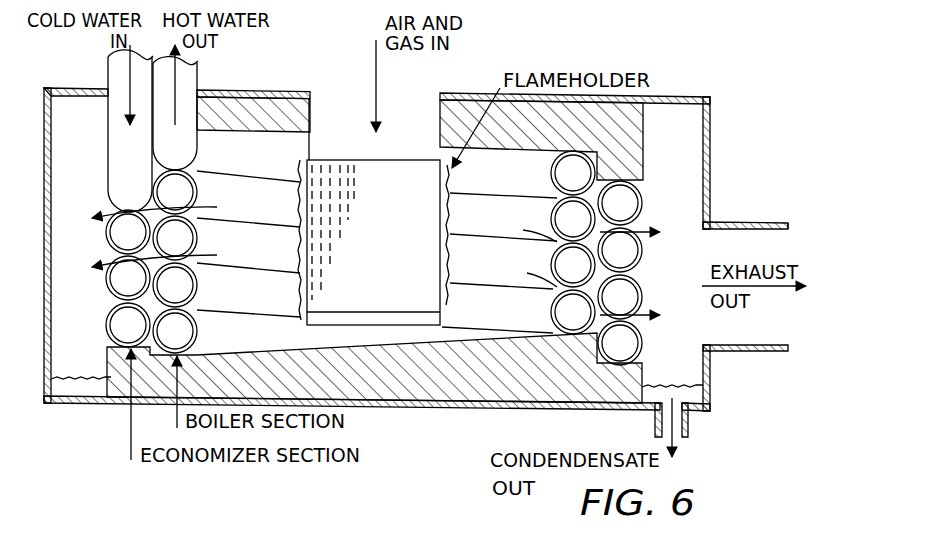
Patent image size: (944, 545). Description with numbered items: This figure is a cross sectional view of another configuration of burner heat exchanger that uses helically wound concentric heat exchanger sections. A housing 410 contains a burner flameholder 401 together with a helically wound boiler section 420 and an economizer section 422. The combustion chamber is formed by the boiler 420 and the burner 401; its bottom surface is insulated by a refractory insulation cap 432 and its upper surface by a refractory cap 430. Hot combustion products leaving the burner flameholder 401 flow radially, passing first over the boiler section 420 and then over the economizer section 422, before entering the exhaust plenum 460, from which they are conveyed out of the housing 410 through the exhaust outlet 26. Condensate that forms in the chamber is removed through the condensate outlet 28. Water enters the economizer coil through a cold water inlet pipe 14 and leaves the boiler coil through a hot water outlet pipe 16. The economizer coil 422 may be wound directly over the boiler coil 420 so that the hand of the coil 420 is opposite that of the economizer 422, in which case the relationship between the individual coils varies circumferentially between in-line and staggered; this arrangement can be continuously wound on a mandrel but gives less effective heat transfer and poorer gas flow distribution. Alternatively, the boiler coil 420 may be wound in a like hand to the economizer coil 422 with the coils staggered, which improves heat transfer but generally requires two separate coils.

The cold water inlet pipe 14 is at (108, 76).
The hot water outlet pipe 16 is at (197, 80).
The exhaust outlet 26 is at (752, 220).
The condensate outlet 28 is at (655, 425).
The burner flameholder 401 is at (300, 240).
The housing 410 is at (712, 140).
The boiler section 420 is at (553, 211).
The economizer section 422 is at (643, 264).
The refractory cap 430 is at (490, 150).
The refractory insulation cap 432 is at (460, 345).
The exhaust plenum 460 is at (677, 178).